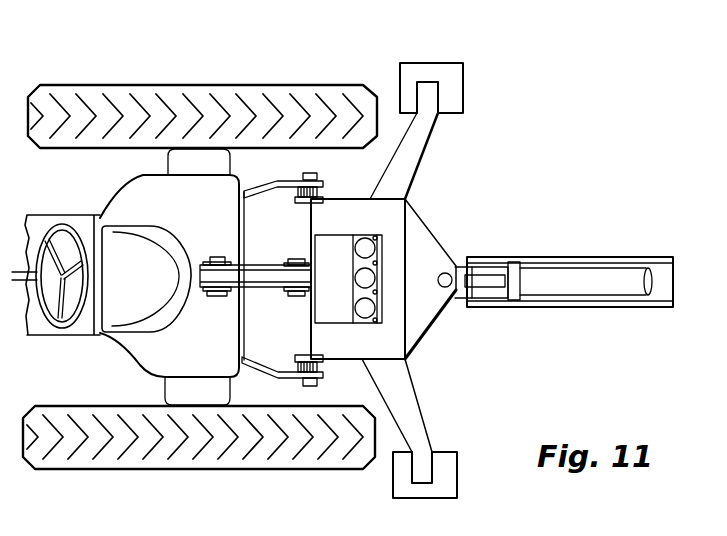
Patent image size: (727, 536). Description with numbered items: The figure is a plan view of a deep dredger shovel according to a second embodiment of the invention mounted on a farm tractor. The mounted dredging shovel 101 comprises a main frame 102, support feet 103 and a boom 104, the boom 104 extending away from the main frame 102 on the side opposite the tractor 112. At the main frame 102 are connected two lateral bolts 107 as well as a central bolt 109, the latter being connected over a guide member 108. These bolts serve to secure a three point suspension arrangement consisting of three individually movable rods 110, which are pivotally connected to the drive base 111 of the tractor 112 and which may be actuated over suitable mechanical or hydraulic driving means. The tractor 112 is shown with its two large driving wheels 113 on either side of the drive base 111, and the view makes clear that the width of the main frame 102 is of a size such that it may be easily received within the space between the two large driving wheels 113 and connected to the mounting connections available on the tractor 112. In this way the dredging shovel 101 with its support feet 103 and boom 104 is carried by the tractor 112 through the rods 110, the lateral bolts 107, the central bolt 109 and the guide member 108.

The dredging shovel 101 is at (452, 210).
The main frame 102 is at (387, 210).
The support feet 103 is at (420, 127).
The boom 104 is at (538, 257).
The lateral bolts 107 is at (320, 173).
The guide member 108 is at (283, 292).
The central bolt 109 is at (288, 260).
The individually movable rods 110 is at (257, 196).
The drive base 111 is at (135, 352).
The tractor 112 is at (115, 82).
The driving wheels 113 is at (328, 93).